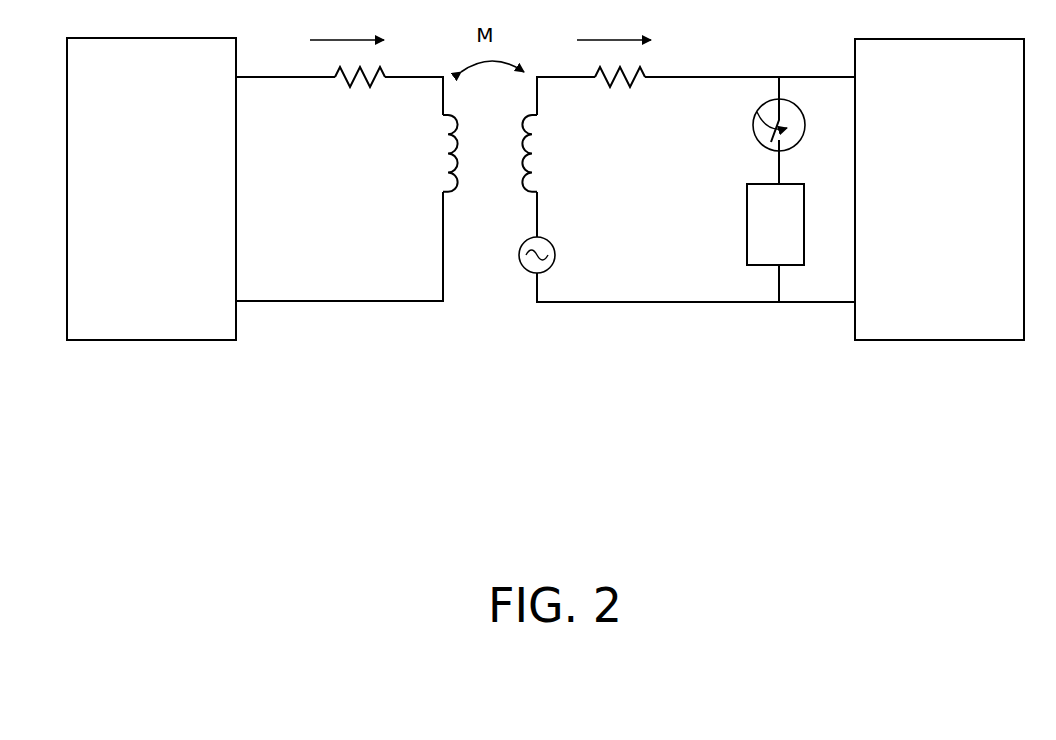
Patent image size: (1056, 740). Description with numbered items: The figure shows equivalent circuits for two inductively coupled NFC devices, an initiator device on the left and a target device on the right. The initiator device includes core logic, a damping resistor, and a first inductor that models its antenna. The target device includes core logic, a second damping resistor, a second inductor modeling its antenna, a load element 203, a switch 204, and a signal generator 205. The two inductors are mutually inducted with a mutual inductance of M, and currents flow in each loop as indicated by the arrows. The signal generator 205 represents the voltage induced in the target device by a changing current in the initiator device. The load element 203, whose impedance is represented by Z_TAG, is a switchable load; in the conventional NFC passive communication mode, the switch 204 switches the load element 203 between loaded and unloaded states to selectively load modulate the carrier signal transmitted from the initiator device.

The load element 203 is at (747, 225).
The switch 204 is at (753, 122).
The signal generator 205 is at (556, 258).